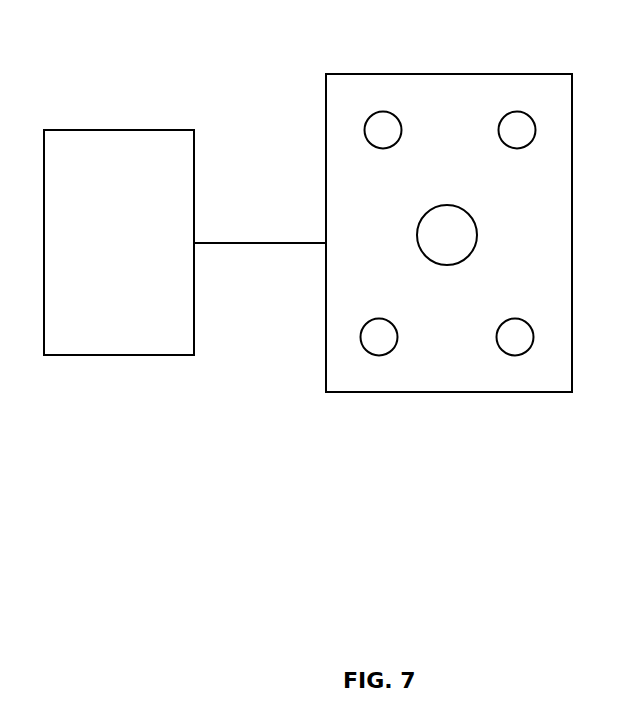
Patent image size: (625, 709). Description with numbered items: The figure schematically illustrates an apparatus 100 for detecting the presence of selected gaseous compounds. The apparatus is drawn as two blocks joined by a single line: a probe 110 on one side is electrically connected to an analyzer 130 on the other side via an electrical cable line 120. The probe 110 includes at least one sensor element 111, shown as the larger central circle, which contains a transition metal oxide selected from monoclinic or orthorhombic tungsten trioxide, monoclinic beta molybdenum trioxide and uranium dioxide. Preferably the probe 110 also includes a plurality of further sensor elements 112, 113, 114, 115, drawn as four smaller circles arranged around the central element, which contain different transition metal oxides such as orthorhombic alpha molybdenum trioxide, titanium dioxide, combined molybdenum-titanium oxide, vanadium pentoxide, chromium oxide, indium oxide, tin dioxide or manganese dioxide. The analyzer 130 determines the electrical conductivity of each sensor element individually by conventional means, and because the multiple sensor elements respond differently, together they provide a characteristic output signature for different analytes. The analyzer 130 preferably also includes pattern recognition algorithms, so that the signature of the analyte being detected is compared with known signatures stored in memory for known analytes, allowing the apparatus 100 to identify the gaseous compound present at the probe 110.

The apparatus 100 is at (242, 95).
The probe 110 is at (449, 260).
The sensor element 111 is at (466, 247).
The sensor element 112 is at (401, 139).
The sensor element 113 is at (499, 122).
The sensor element 114 is at (400, 330).
The sensor element 115 is at (497, 325).
The electrical cable line 120 is at (285, 233).
The analyzer 130 is at (113, 219).